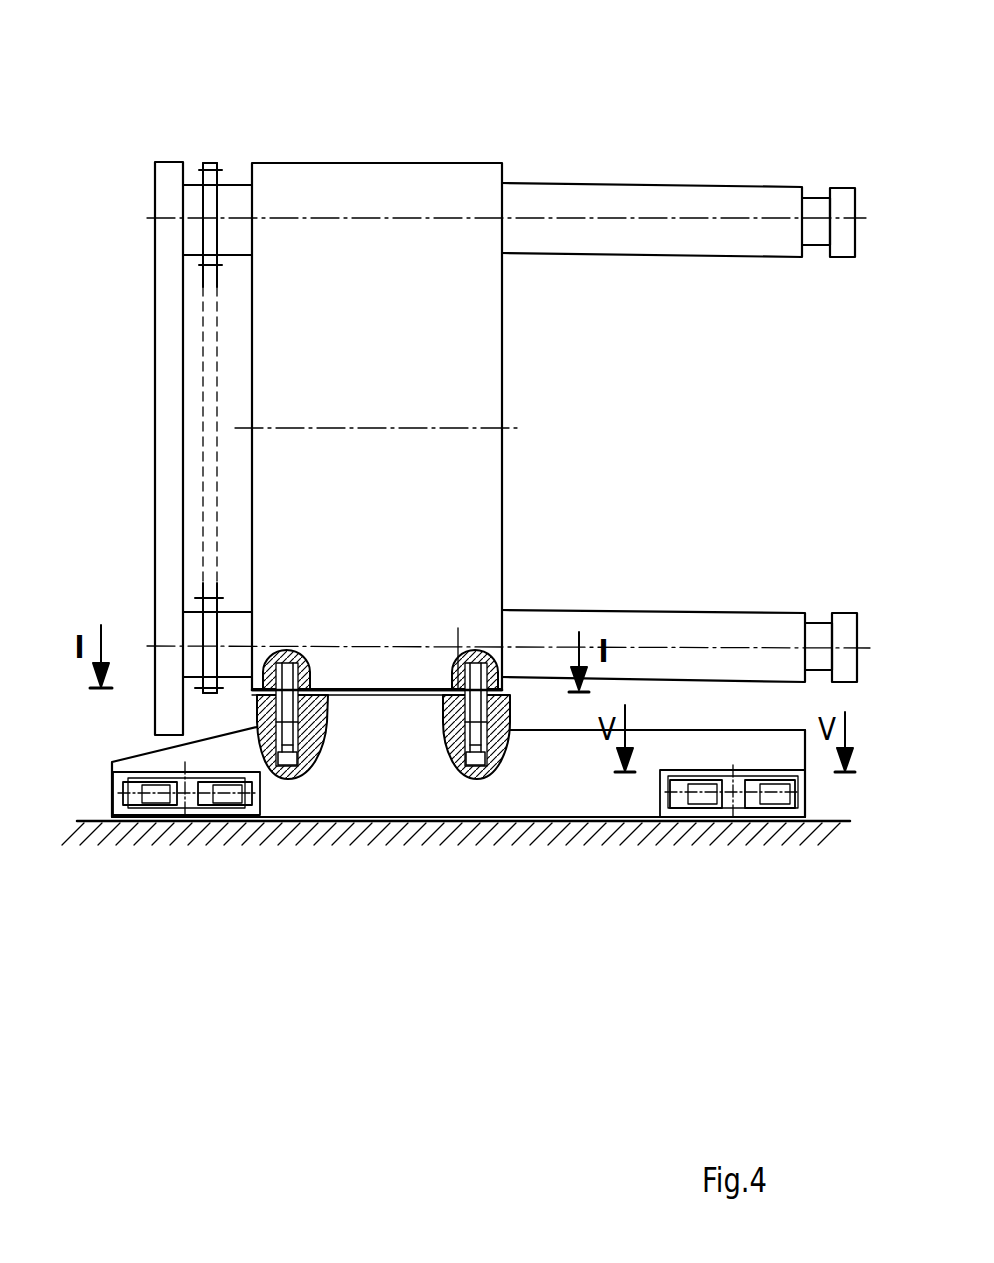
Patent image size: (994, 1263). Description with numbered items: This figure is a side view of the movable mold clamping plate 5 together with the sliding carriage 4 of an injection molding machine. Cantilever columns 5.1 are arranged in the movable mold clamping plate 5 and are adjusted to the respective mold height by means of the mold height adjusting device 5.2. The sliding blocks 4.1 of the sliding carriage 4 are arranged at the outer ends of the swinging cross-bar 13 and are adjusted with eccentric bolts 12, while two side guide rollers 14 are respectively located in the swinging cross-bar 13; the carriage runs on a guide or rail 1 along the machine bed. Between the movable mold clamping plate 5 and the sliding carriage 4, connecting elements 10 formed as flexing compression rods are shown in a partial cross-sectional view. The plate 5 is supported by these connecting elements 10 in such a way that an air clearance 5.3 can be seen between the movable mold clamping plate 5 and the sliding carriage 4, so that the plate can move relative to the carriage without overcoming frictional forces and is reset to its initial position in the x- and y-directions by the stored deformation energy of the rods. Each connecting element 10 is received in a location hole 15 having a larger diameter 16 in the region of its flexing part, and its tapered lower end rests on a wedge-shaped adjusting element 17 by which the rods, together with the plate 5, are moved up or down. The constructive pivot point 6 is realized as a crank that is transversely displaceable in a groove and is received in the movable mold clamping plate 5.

The roller carriage 1 is at (258, 826).
The sliding carriage 4 is at (133, 757).
The sliding blocks 4.1 is at (573, 792).
The movable mold clamping plate 5 is at (378, 193).
The cantilever columns 5.1 is at (619, 210).
The mold height adjusting device 5.2 is at (207, 183).
The air clearance 5.3 is at (439, 706).
The pivot point 6 is at (459, 643).
The connecting elements 10 is at (497, 656).
The eccentric bolts 12 is at (742, 810).
The swinging cross-bar 13 is at (734, 797).
The side guide rollers 14 is at (683, 795).
The location hole 15 is at (460, 760).
The larger diameter 16 is at (345, 730).
The wedge-shaped adjusting element 17 is at (470, 780).